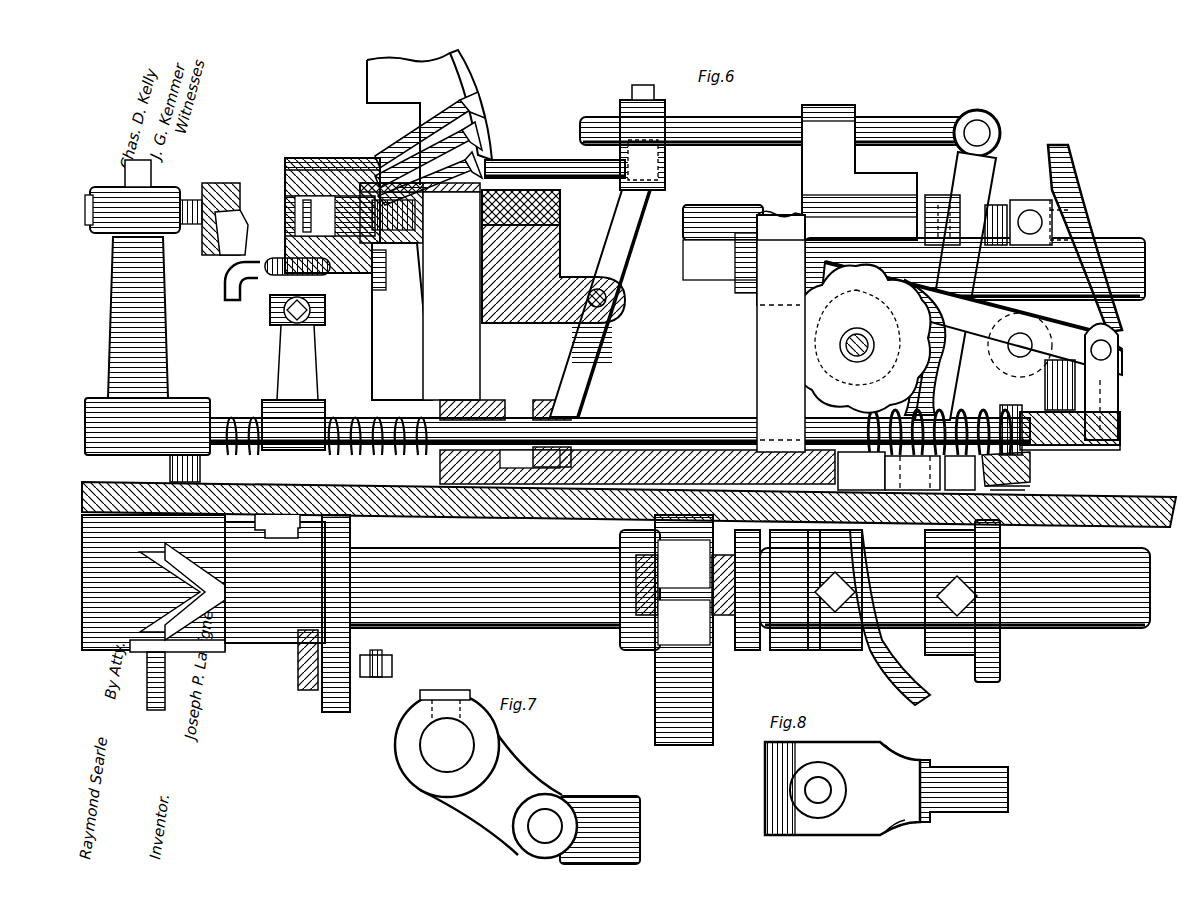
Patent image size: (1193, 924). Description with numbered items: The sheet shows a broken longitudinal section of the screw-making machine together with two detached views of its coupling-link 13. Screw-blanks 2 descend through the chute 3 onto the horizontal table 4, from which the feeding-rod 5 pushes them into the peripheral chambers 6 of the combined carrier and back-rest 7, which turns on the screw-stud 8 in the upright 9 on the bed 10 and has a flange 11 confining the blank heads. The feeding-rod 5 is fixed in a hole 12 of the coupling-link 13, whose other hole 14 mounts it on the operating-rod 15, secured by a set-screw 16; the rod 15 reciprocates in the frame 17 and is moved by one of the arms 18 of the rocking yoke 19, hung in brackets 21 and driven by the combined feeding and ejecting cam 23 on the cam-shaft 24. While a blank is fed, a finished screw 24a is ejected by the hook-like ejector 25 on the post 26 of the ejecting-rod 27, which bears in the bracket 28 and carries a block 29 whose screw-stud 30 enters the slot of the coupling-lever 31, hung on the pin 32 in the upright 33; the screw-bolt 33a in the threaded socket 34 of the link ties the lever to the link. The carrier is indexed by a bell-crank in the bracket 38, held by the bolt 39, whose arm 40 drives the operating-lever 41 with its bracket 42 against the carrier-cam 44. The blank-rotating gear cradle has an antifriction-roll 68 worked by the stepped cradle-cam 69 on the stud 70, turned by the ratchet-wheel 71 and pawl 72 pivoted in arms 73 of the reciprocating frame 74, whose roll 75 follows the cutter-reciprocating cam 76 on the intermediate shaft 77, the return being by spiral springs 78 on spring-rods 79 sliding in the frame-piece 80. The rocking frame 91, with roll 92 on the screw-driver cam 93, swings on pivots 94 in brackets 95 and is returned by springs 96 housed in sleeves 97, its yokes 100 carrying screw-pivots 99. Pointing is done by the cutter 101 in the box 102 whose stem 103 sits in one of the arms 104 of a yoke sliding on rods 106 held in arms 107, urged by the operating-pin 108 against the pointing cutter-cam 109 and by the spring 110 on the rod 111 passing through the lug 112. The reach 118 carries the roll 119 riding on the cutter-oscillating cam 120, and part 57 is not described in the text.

In FIG. 6, the screw-blanks 2 is at (430, 148).
In FIG. 6, the chute 3 is at (478, 95).
In FIG. 6, the horizontal table 4 is at (455, 190).
In FIG. 6, the feeding-rod 5 is at (518, 166).
In FIG. 6, the peripheral chambers 6 is at (318, 166).
In FIG. 6, the combined carrier and back-rest 7 is at (285, 185).
In FIG. 6, the screw-stud 8 is at (330, 216).
In FIG. 6, the upright 9 is at (402, 321).
In FIG. 6, the bed 10 is at (388, 484).
In FIG. 6, the flange 11 is at (368, 246).
In FIG. 7, the hole 12 is at (545, 826).
In FIG. 6, the coupling-link 13 is at (665, 158).
In FIG. 7, the coupling-link 13 is at (520, 774).
In FIG. 8, the coupling-link 13 is at (842, 788).
In FIG. 7, the hole 14 is at (447, 743).
In FIG. 6, the operating-rod 15 is at (715, 124).
In FIG. 6, the set-screw 16 is at (644, 86).
In FIG. 6, the frame 17 is at (859, 172).
In FIG. 6, the arms 18 is at (962, 162).
In FIG. 6, the rocking yoke 19 is at (942, 390).
In FIG. 6, the brackets 21 is at (948, 462).
In FIG. 6, the combined feeding and ejecting cam 23 is at (888, 552).
In FIG. 6, the cam-shaft 24 is at (775, 562).
In FIG. 6, the finished screw 24a is at (299, 272).
In FIG. 6, the hook-like ejector 25 is at (228, 300).
In FIG. 6, the post 26 is at (297, 347).
In FIG. 6, the ejecting-rod 27 is at (340, 412).
In FIG. 6, the bracket 28 is at (637, 464).
In FIG. 6, the block 29 is at (536, 404).
In FIG. 6, the screw-stud 30 is at (575, 420).
In FIG. 6, the coupling-lever 31 is at (596, 352).
In FIG. 6, the pin 32 is at (622, 296).
In FIG. 6, the upright 33 is at (508, 320).
In FIG. 6, the screw-bolt 33a is at (666, 176).
In FIG. 7, the threaded socket 34 is at (600, 819).
In FIG. 8, the threaded socket 34 is at (964, 791).
In FIG. 6, the bracket 38 is at (300, 545).
In FIG. 6, the bolt 39 is at (258, 520).
In FIG. 6, the arm 40 is at (285, 622).
In FIG. 6, the operating-lever 41 is at (298, 665).
In FIG. 6, the bracket 42 is at (275, 632).
In FIG. 6, the carrier-cam 44 is at (350, 690).
In FIG. 6, the block 57 is at (772, 212).
In FIG. 6, the antifriction-roll 68 is at (765, 330).
In FIG. 6, the stepped cradle-cam 69 is at (859, 339).
In FIG. 6, the stud 70 is at (840, 348).
In FIG. 6, the ratchet-wheel 71 is at (812, 382).
In FIG. 6, the pawl 72 is at (972, 318).
In FIG. 6, the arms 73 is at (1120, 383).
In FIG. 6, the reciprocating frame 74 is at (1122, 430).
In FIG. 6, the antifriction-roll 75 is at (1145, 408).
In FIG. 6, the cutter-reciprocating cam 76 is at (1112, 312).
In FIG. 6, the intermediate shaft 77 is at (1138, 265).
In FIG. 6, the spiral springs 78 is at (861, 471).
In FIG. 6, the spring-rods 79 is at (912, 472).
In FIG. 6, the frame-piece 80 is at (781, 346).
In FIG. 6, the rocking frame 91 is at (1032, 470).
In FIG. 6, the antifriction-roll 92 is at (1030, 492).
In FIG. 6, the screw-driver cam 93 is at (1000, 550).
In FIG. 6, the pivots 94 is at (1010, 343).
In FIG. 6, the brackets 95 is at (995, 362).
In FIG. 6, the spiral springs 96 is at (995, 208).
In FIG. 6, the sleeves 97 is at (935, 205).
In FIG. 6, the screw-pivots 99 is at (1035, 222).
In FIG. 6, the yokes 100 is at (1026, 297).
In FIG. 6, the cutter 101 is at (238, 226).
In FIG. 6, the box 102 is at (210, 238).
In FIG. 6, the stem 103 is at (205, 205).
In FIG. 6, the arms 104 is at (147, 307).
In FIG. 6, the rods 106 is at (222, 414).
In FIG. 6, the arms 107 is at (293, 439).
In FIG. 6, the operating-pin 108 is at (200, 468).
In FIG. 6, the pointing cutter-cam 109 is at (178, 562).
In FIG. 6, the spring 110 is at (336, 466).
In FIG. 6, the rod 111 is at (398, 410).
In FIG. 6, the lug 112 is at (460, 404).
In FIG. 6, the reach 118 is at (622, 583).
In FIG. 6, the antifriction-roll 119 is at (678, 572).
In FIG. 6, the cutter-oscillating cam 120 is at (728, 662).